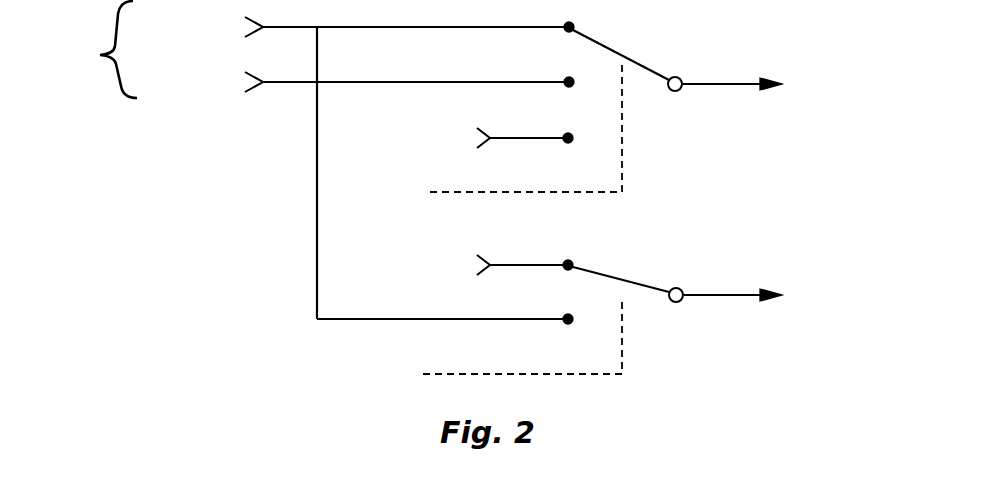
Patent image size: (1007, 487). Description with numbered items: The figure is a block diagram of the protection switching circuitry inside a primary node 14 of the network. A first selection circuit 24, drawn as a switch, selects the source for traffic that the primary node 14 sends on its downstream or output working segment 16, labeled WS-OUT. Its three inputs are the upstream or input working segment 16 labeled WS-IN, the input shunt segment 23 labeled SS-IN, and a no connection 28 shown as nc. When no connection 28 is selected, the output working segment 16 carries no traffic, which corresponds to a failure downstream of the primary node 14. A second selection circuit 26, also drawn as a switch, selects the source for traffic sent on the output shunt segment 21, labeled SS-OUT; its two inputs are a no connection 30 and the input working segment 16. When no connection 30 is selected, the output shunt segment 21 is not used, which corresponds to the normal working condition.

The primary node 14 is at (181, 160).
The working segment 16 is at (460, 27).
The input shunt segment 23 is at (460, 82).
The first selection circuit 24 is at (640, 33).
The second selection circuit 26 is at (633, 259).
The no connection 28 is at (494, 138).
The no connection 30 is at (495, 265).
The output shunt segment 21 is at (690, 295).